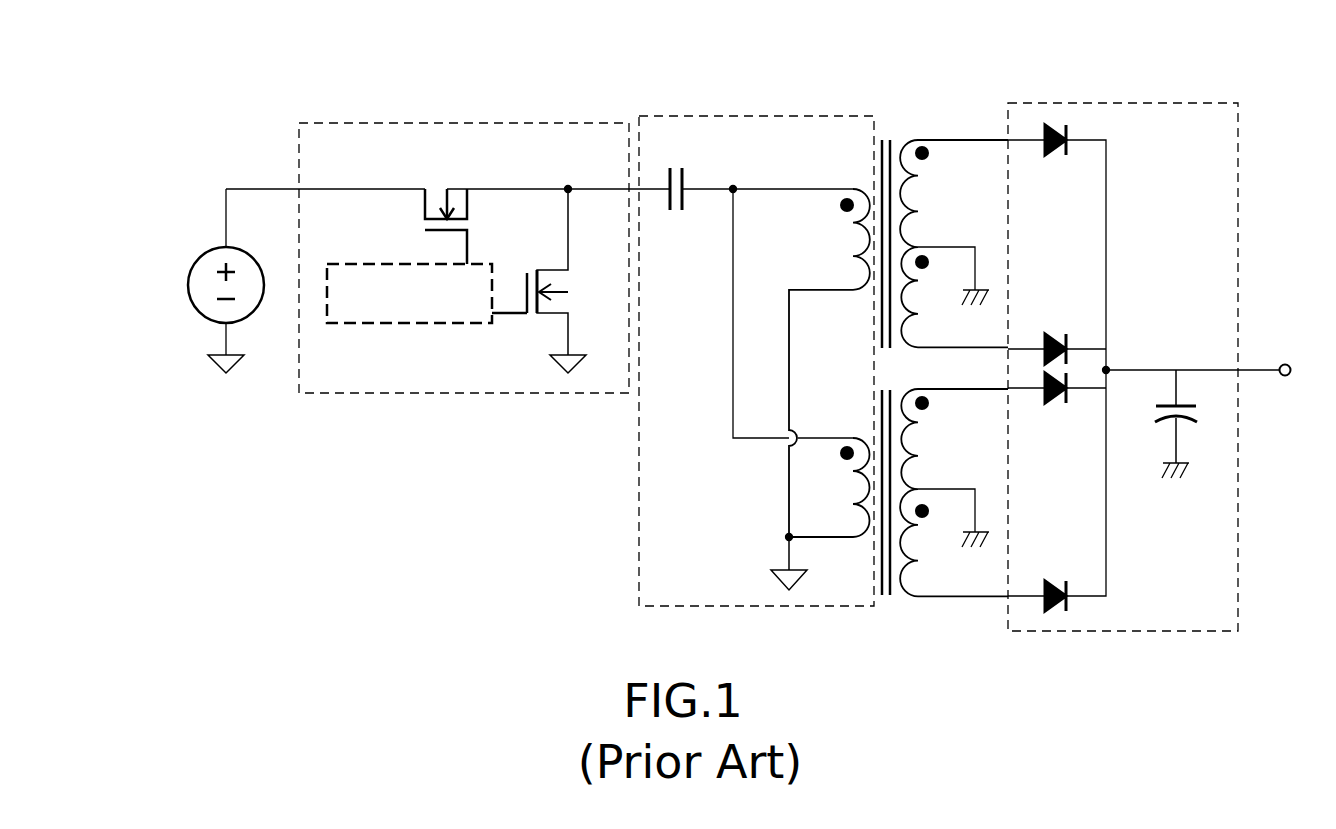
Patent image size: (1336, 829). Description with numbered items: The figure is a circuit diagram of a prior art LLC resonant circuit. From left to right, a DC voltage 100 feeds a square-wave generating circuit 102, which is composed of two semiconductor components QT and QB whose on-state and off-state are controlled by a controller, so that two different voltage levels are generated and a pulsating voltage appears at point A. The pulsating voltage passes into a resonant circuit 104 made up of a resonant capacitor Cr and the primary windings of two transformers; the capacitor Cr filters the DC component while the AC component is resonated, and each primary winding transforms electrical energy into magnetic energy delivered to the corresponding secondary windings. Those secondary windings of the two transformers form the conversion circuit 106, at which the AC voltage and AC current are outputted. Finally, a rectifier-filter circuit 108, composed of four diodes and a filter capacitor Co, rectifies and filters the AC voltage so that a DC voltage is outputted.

The DC voltage 100 is at (203, 292).
The square-wave generating circuit 102 is at (395, 123).
The resonant circuit 104 is at (711, 116).
The conversion circuit 106 is at (911, 125).
The rectifier-filter circuit 108 is at (1122, 103).